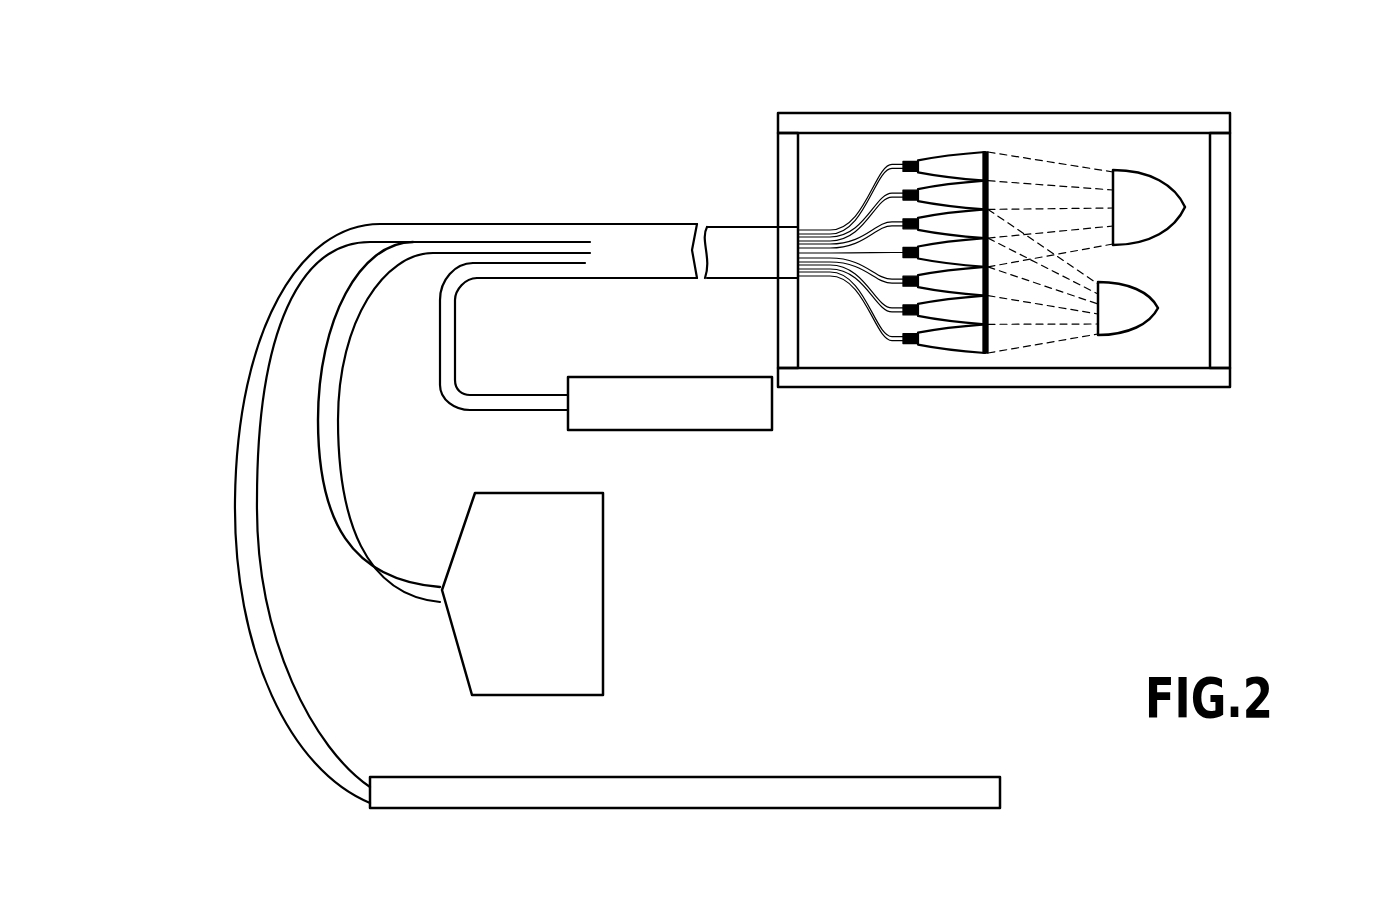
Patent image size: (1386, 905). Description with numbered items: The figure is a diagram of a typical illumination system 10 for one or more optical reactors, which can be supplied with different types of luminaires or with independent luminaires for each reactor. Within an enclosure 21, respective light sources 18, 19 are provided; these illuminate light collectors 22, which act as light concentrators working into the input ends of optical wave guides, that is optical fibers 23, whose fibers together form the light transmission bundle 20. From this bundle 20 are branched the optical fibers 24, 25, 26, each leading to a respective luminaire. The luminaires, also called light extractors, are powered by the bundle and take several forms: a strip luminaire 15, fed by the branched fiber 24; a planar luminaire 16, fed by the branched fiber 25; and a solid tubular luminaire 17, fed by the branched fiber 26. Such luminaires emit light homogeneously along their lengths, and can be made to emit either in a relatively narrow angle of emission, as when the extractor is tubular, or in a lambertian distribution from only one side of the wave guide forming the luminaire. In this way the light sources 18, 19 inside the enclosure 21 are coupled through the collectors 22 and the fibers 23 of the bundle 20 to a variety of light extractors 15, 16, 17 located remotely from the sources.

The illumination system 10 is at (948, 562).
The strip luminaire 15 is at (707, 403).
The planar luminaire 16 is at (583, 580).
The tubular luminaire 17 is at (943, 800).
The light source 18 is at (1160, 213).
The light source 19 is at (1132, 313).
The bundle of optical fibers 20 is at (652, 238).
The enclosure 21 is at (1222, 263).
The light collectors 22 is at (953, 380).
The optical wave guides 23 is at (905, 160).
The branched optical fiber 24 is at (487, 402).
The branched optical fiber 25 is at (383, 573).
The branched optical fiber 26 is at (320, 777).